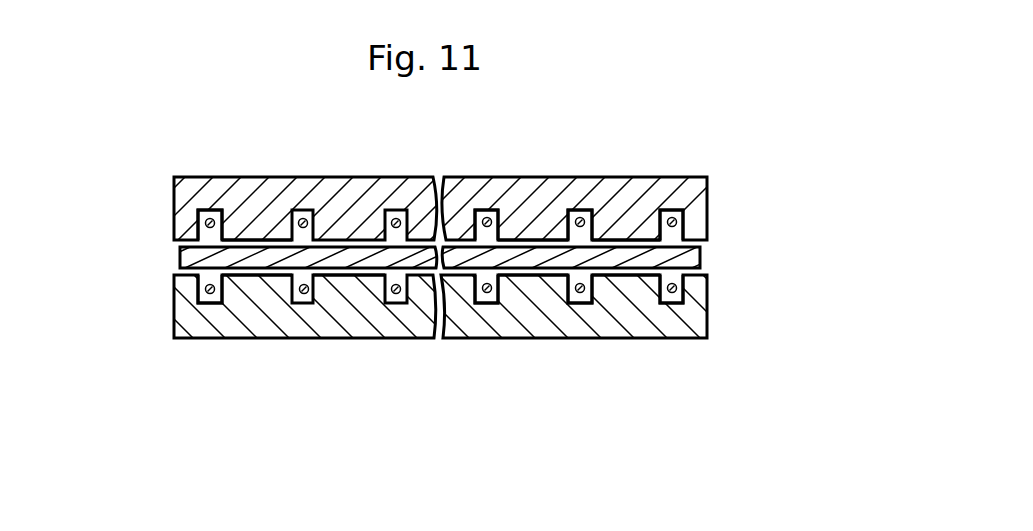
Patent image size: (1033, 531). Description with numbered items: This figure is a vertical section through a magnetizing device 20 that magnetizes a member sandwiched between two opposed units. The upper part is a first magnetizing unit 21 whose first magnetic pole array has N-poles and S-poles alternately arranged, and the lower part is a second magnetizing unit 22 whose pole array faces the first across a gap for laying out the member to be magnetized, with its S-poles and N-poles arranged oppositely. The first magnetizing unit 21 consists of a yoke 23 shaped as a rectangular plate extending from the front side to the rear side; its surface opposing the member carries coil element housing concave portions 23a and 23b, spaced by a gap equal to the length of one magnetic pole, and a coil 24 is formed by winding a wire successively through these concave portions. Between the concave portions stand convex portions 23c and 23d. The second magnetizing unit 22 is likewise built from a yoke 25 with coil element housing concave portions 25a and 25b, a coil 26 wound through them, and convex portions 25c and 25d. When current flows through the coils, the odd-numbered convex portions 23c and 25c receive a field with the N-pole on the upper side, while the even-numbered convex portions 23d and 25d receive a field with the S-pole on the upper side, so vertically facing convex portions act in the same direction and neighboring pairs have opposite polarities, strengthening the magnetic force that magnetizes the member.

The magnetizing device 20 is at (684, 157).
The first magnetizing unit 21 is at (567, 147).
The second magnetizing unit 22 is at (550, 338).
The yoke 23 is at (327, 193).
The coil element housing concave portion 23a is at (480, 208).
The coil element housing concave portion 23b is at (213, 214).
The convex portion 23c is at (267, 222).
The convex portion 23d is at (537, 217).
The coil 24 is at (216, 212).
The yoke 25 is at (358, 323).
The coil element housing concave portion 25a is at (493, 300).
The coil element housing concave portion 25b is at (203, 301).
The convex portion 25c is at (250, 290).
The convex portion 25d is at (343, 283).
The coil 26 is at (306, 294).